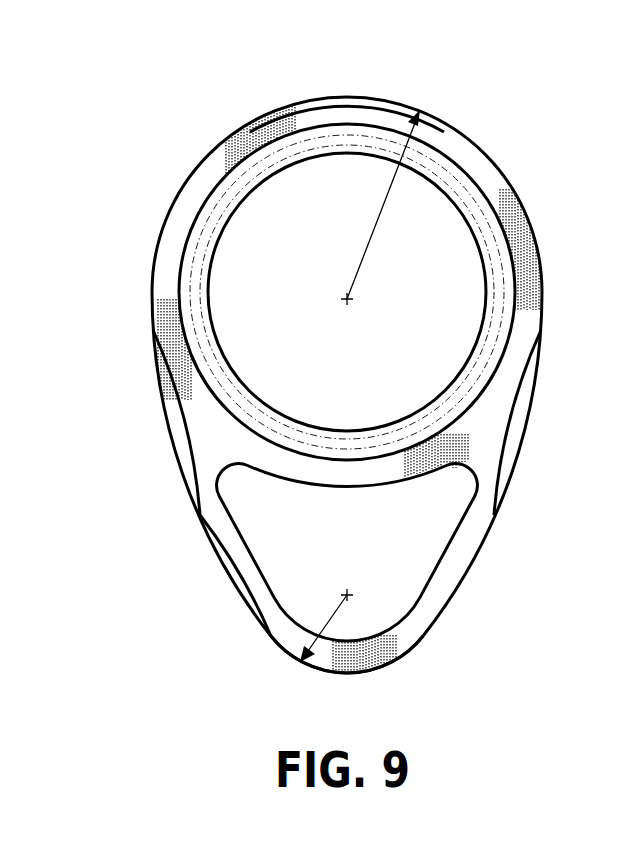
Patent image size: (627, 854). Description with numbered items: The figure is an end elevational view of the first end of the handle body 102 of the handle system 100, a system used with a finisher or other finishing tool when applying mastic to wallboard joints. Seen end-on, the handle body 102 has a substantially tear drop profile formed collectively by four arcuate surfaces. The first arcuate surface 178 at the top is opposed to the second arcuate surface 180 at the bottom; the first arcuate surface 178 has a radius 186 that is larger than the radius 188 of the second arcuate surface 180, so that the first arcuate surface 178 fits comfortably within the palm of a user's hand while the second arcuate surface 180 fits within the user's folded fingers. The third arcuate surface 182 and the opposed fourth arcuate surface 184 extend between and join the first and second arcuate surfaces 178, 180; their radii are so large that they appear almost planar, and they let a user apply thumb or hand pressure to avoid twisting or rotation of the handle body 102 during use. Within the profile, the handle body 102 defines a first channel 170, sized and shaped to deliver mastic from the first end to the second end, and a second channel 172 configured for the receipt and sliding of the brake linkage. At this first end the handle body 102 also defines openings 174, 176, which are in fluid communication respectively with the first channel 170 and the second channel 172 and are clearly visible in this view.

The handle system 100 is at (222, 90).
The handle body 102 is at (331, 343).
The first channel 170 is at (435, 287).
The second channel 172 is at (408, 547).
The opening 174 is at (218, 233).
The opening 176 is at (255, 563).
The first arcuate surface 178 is at (347, 97).
The second arcuate surface 180 is at (348, 673).
The third arcuate surface 182 is at (510, 475).
The fourth arcuate surface 184 is at (187, 482).
The radius 186 is at (368, 243).
The radius 188 is at (338, 610).